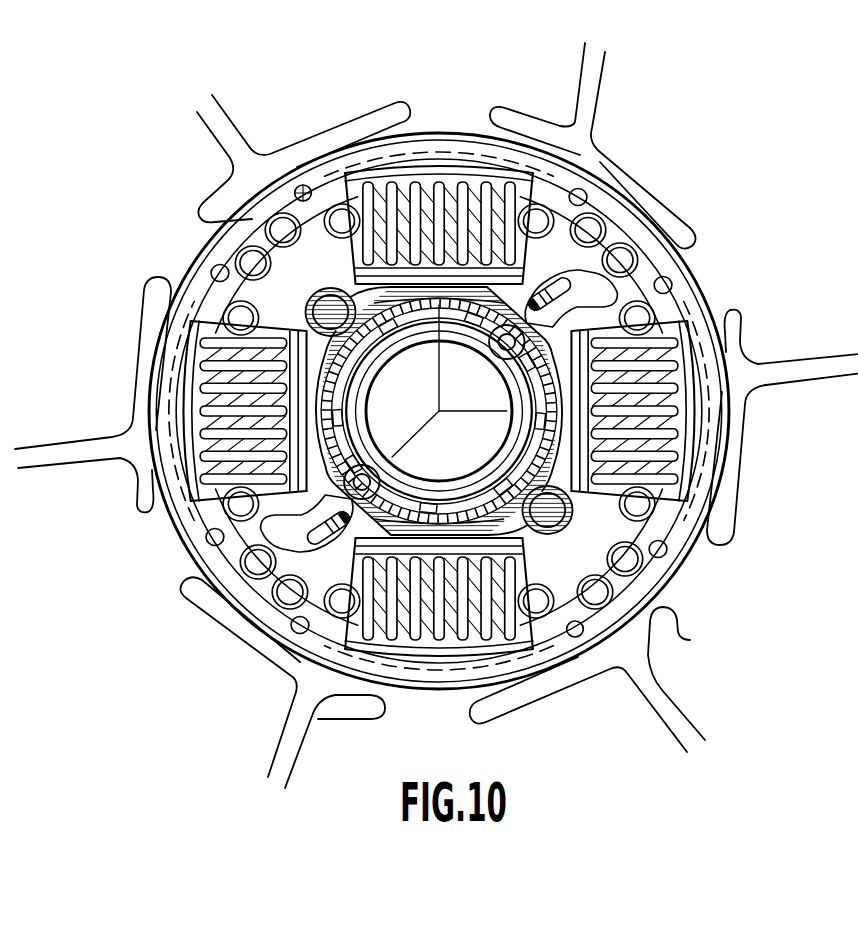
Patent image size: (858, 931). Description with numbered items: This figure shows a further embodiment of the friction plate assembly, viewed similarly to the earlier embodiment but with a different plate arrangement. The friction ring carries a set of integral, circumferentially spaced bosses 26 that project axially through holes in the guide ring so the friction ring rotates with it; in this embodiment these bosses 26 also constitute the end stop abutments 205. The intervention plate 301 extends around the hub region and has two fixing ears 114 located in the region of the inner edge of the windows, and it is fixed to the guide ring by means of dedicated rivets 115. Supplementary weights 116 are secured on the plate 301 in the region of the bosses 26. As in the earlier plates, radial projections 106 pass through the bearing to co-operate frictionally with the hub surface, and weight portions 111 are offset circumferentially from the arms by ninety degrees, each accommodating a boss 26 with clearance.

The boss 26 is at (677, 243).
The radial projection 106 is at (404, 452).
The weight portion 111 is at (390, 465).
The fixing ear 114 is at (328, 305).
The rivet 115 is at (501, 369).
The supplementary weight 116 is at (566, 227).
The end stop abutment 205 is at (345, 522).
The intervention plate 301 is at (560, 333).